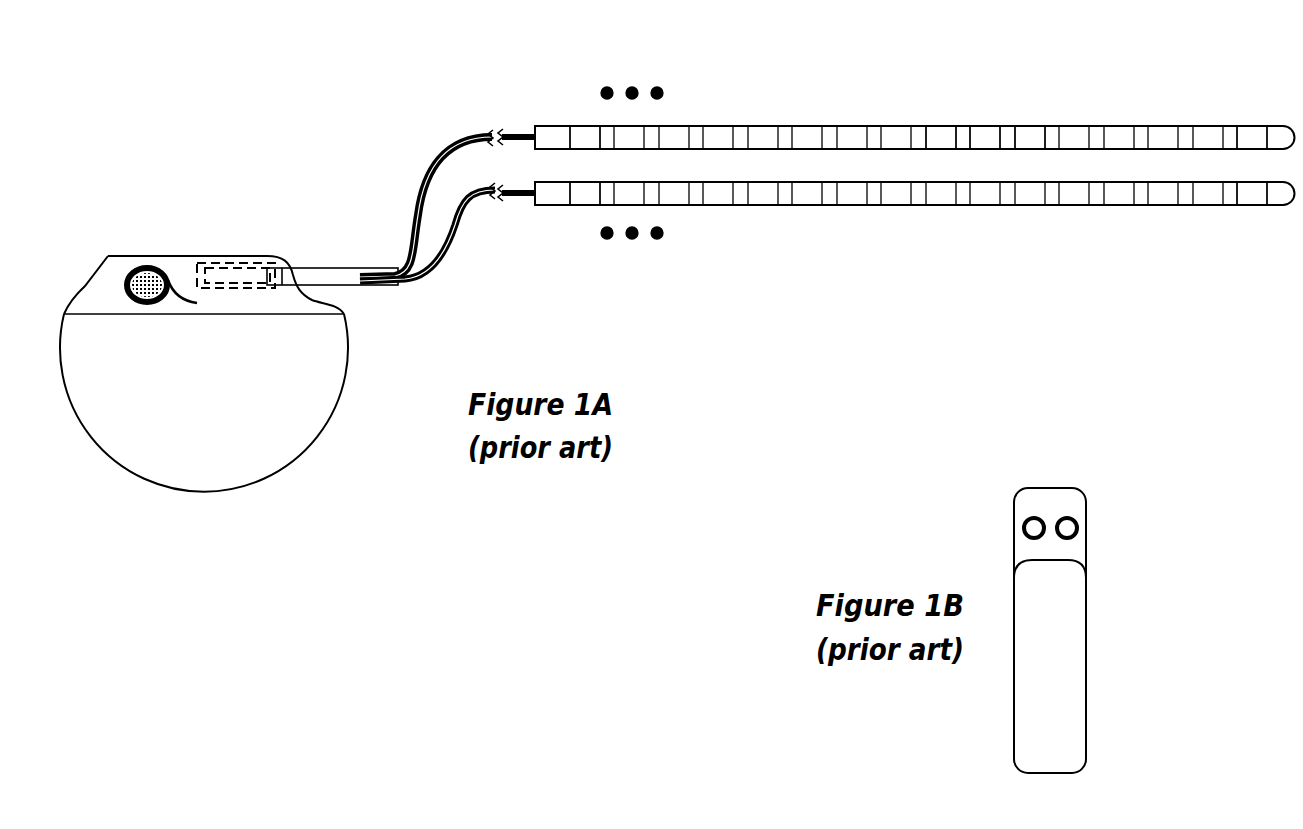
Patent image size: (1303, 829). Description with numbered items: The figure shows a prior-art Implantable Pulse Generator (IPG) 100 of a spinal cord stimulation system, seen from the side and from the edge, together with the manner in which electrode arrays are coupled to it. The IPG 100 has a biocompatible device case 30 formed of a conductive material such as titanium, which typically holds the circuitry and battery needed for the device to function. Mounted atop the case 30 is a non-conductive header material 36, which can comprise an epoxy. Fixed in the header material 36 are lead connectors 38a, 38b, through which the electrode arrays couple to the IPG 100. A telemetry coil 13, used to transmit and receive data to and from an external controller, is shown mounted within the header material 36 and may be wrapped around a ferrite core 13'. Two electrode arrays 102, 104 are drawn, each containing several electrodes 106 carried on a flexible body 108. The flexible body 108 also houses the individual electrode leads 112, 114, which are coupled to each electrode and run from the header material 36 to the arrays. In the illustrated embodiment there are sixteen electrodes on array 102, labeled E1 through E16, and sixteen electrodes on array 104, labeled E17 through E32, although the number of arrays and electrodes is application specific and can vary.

In FIG. 1A, the implantable pulse generator 100 is at (222, 279).
In FIG. 1B, the implantable pulse generator 100 is at (1054, 607).
In FIG. 1A, the device case 30 is at (333, 420).
In FIG. 1B, the device case 30 is at (1087, 592).
In FIG. 1A, the header material 36 is at (98, 270).
In FIG. 1B, the header material 36 is at (1087, 538).
In FIG. 1A, the telemetry coil 13 is at (147, 310).
In FIG. 1A, the ferrite core 13' is at (137, 264).
In FIG. 1A, the lead connector 38a is at (230, 263).
In FIG. 1B, the lead connector 38a is at (1034, 518).
In FIG. 1A, the lead connector 38b is at (237, 275).
In FIG. 1B, the lead connector 38b is at (1067, 518).
In FIG. 1A, the electrode array 102 is at (896, 98).
In FIG. 1A, the electrode array 104 is at (896, 231).
In FIG. 1A, the electrodes 106 is at (938, 137).
In FIG. 1A, the flexible body 108 is at (743, 133).
In FIG. 1A, the electrode lead 112 is at (450, 142).
In FIG. 1A, the electrode lead 114 is at (455, 253).
In FIG. 1A, the electrode E1 is at (587, 138).
In FIG. 1A, the electrode E16 is at (1247, 137).
In FIG. 1A, the electrode E17 is at (585, 193).
In FIG. 1A, the electrode E32 is at (1247, 190).